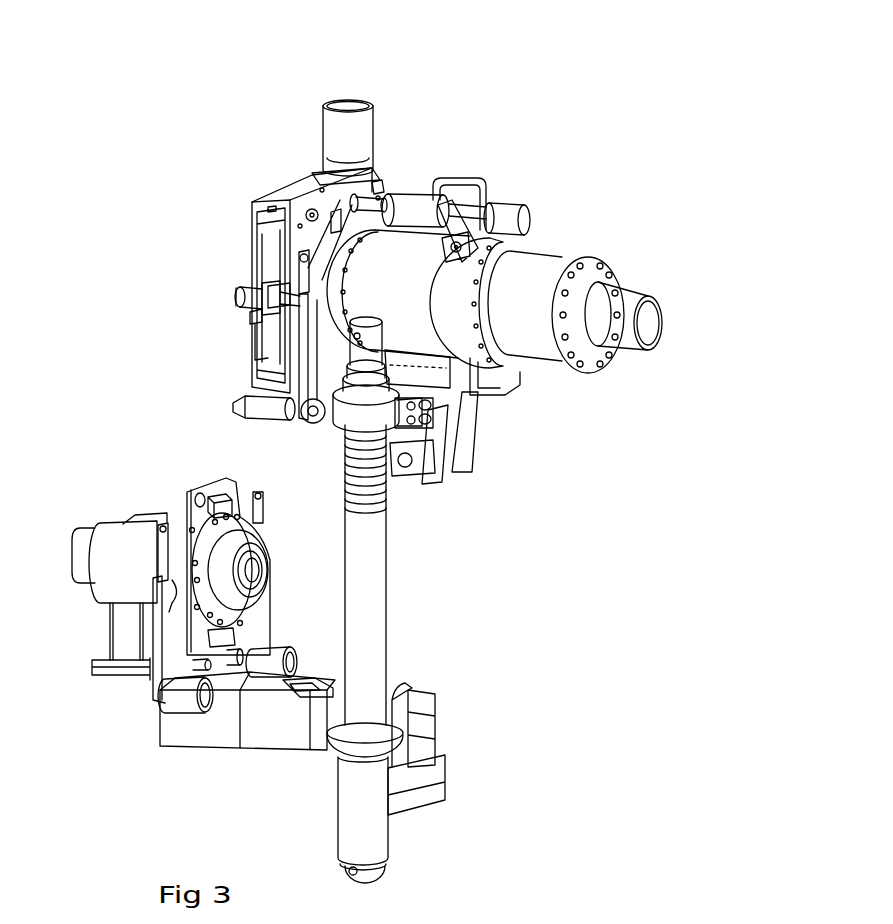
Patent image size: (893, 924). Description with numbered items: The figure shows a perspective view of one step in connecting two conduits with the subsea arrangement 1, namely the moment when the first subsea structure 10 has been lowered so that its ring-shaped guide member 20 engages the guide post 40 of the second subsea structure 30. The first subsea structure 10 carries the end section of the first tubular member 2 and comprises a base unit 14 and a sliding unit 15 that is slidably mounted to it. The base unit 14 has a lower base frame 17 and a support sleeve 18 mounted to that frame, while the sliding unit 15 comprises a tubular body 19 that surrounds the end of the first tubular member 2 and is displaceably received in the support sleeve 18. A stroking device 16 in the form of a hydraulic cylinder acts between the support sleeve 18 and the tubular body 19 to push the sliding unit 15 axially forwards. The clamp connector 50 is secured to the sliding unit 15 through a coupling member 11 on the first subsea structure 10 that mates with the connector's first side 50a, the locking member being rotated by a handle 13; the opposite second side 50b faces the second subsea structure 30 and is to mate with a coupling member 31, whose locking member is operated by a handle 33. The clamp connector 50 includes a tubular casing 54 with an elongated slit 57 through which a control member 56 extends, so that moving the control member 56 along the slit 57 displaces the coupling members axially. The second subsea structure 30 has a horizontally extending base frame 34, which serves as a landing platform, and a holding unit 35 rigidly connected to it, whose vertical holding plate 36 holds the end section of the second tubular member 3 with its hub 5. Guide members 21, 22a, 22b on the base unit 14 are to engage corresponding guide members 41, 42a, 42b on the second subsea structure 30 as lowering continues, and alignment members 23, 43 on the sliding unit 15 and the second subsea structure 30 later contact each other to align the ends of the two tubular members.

The subsea arrangement 1 is at (460, 65).
The first tubular member 2 is at (628, 300).
The second tubular member 3 is at (78, 553).
The hub 5 is at (253, 570).
The first subsea structure 10 is at (547, 172).
The coupling member 11 is at (315, 305).
The handle 13 is at (310, 288).
The base unit 14 is at (489, 384).
The sliding unit 15 is at (591, 240).
The stroking device 16 is at (406, 200).
The base frame 17 is at (460, 393).
The support sleeve 18 is at (417, 240).
The tubular body 19 is at (545, 268).
The ring-shaped guide member 20 is at (352, 422).
The guide member 21 is at (440, 452).
The guide member 22a is at (430, 465).
The guide member 22b is at (467, 447).
The alignment member 23 is at (296, 402).
The second subsea structure 30 is at (143, 480).
The coupling member 31 is at (168, 587).
The handle 33 is at (265, 503).
The base frame 34 is at (172, 732).
The holding unit 35 is at (243, 487).
The holding plate 36 is at (216, 492).
The guide post 40 is at (383, 567).
The guide member 41 is at (400, 687).
The guide member 42a is at (272, 735).
The guide member 42b is at (313, 683).
The alignment member 43 is at (273, 655).
The clamp connector 50 is at (318, 148).
The first side 50a is at (377, 190).
The second side 50b is at (246, 230).
The tubular casing 54 is at (237, 297).
The control member 56 is at (267, 292).
The elongated slit 57 is at (255, 312).